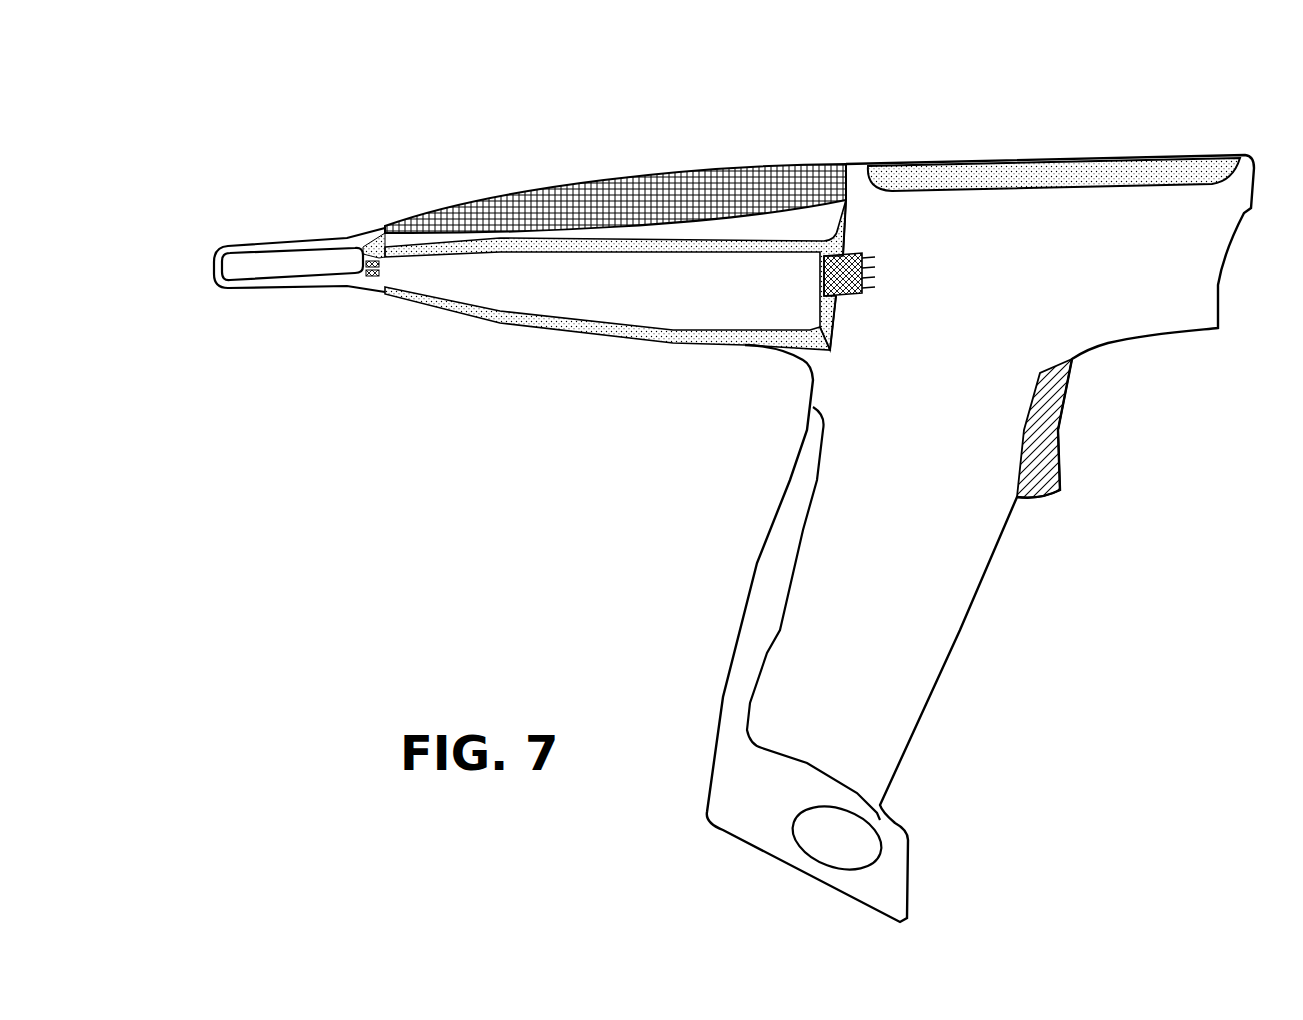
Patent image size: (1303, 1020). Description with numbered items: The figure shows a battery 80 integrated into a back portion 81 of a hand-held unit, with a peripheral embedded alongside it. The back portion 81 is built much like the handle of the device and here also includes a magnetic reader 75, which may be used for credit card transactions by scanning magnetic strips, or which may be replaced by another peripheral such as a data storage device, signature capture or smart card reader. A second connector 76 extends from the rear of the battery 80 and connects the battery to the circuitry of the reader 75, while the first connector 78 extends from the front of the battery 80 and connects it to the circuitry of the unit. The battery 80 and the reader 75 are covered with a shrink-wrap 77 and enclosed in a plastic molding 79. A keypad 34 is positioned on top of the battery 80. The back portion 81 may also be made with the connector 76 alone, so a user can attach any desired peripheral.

The keypad 34 is at (626, 154).
The magnetic reader 75 is at (292, 276).
The second connector 76 is at (372, 286).
The shrink-wrap 77 is at (380, 252).
The first connector 78 is at (897, 272).
The plastic molding 79 is at (677, 332).
The battery 80 is at (767, 296).
The back portion 81 is at (246, 190).